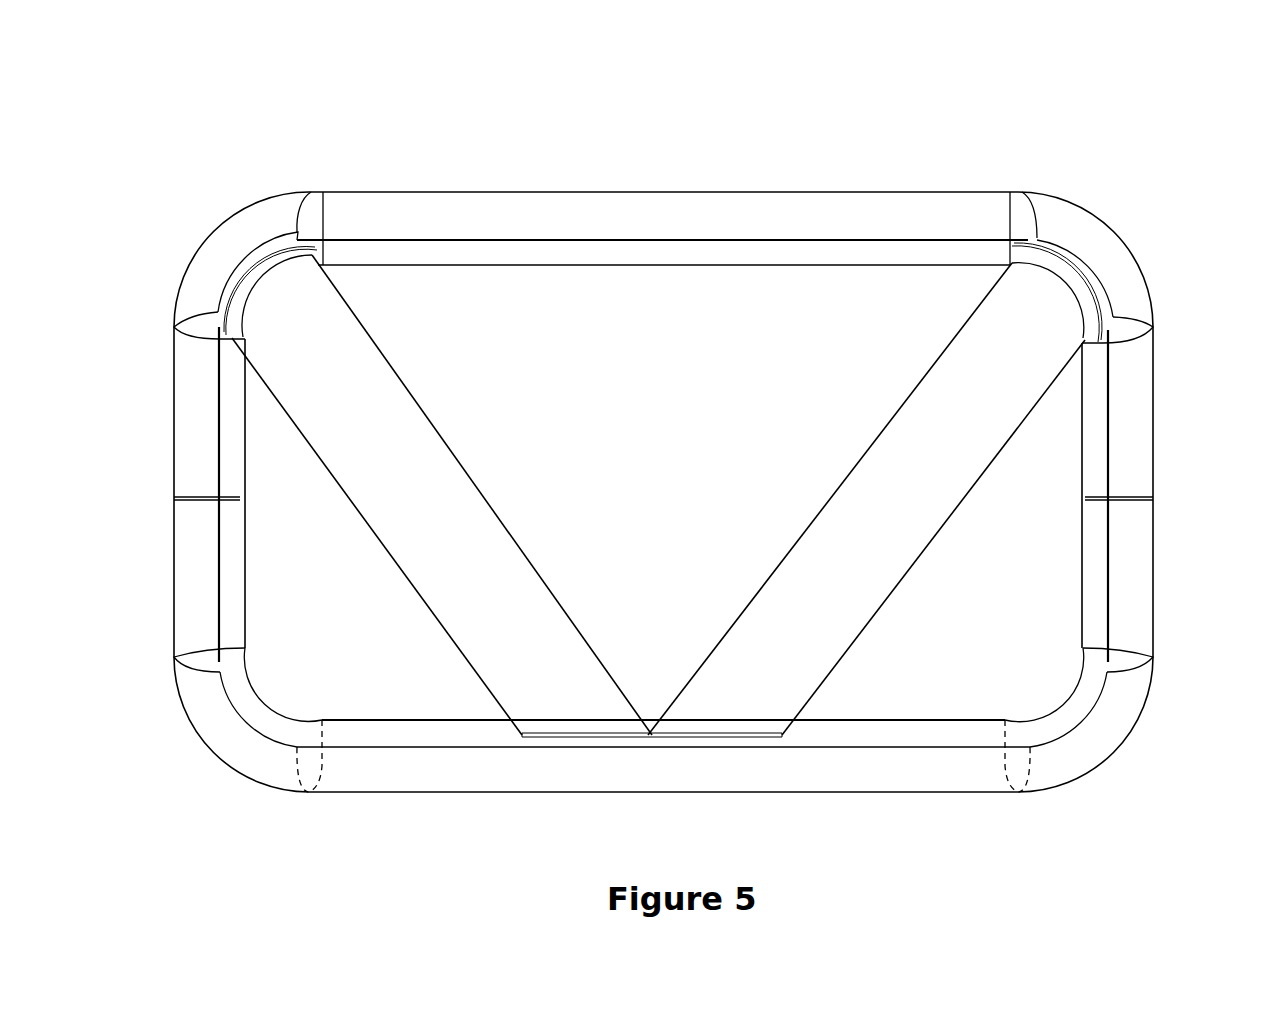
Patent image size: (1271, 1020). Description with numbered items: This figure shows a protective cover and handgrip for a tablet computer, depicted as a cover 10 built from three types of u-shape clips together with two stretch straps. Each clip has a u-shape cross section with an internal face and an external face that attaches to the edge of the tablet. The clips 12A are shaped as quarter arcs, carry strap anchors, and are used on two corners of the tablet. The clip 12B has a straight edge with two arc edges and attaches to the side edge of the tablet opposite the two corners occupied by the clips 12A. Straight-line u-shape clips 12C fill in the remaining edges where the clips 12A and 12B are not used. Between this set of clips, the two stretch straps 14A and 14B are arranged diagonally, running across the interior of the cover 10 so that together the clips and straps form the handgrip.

The cover 10 is at (652, 47).
The quarter-arc u-shape clip 12A is at (205, 217).
The straight-edge u-shape clip with arc edges 12B is at (1110, 213).
The straight u-shape clip 12C is at (518, 196).
The stretch strap 14A is at (445, 497).
The stretch strap 14B is at (850, 463).